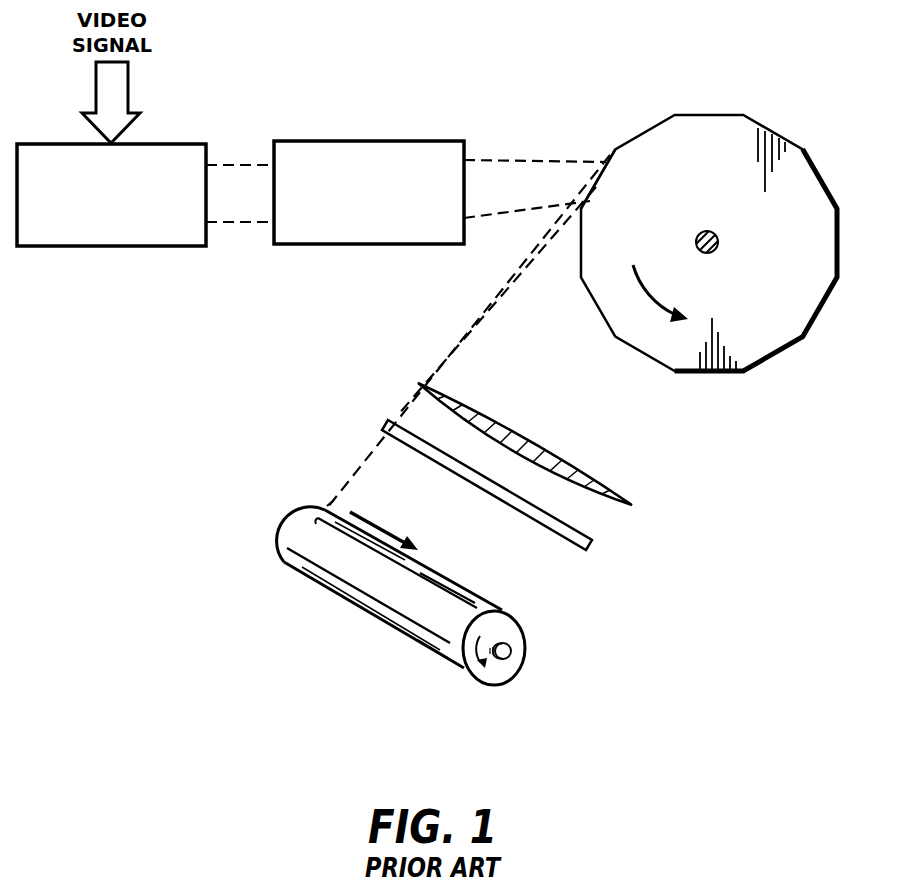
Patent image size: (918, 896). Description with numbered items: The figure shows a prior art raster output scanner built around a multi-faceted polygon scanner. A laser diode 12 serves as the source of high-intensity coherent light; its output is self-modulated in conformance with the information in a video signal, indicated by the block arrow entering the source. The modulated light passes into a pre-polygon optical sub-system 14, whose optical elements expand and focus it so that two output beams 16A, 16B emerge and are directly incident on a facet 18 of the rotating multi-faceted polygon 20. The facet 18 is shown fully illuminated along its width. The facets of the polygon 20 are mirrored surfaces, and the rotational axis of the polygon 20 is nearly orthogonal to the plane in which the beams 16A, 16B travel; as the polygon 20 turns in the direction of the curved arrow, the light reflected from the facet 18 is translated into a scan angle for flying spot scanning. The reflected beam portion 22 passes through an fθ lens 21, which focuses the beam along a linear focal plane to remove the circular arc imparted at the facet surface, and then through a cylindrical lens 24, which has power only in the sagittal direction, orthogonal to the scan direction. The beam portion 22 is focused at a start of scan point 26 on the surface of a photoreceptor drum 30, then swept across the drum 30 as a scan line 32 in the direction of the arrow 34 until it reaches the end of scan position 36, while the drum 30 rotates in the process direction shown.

The laser diode 12 is at (160, 144).
The pre-polygon optical sub-system 14 is at (405, 141).
The output beam 16A is at (528, 160).
The output beam 16B is at (488, 212).
The facet 18 is at (592, 185).
The rotating multi-faceted polygon 20 is at (703, 132).
The fθ lens 21 is at (593, 470).
The beam portion 22 is at (480, 321).
The cylindrical lens 24 is at (592, 543).
The start of scan point 26 is at (327, 508).
The photoreceptor drum 30 is at (357, 617).
The scan line 32 is at (438, 577).
The arrow 34 is at (362, 513).
The end of scan position 36 is at (500, 612).